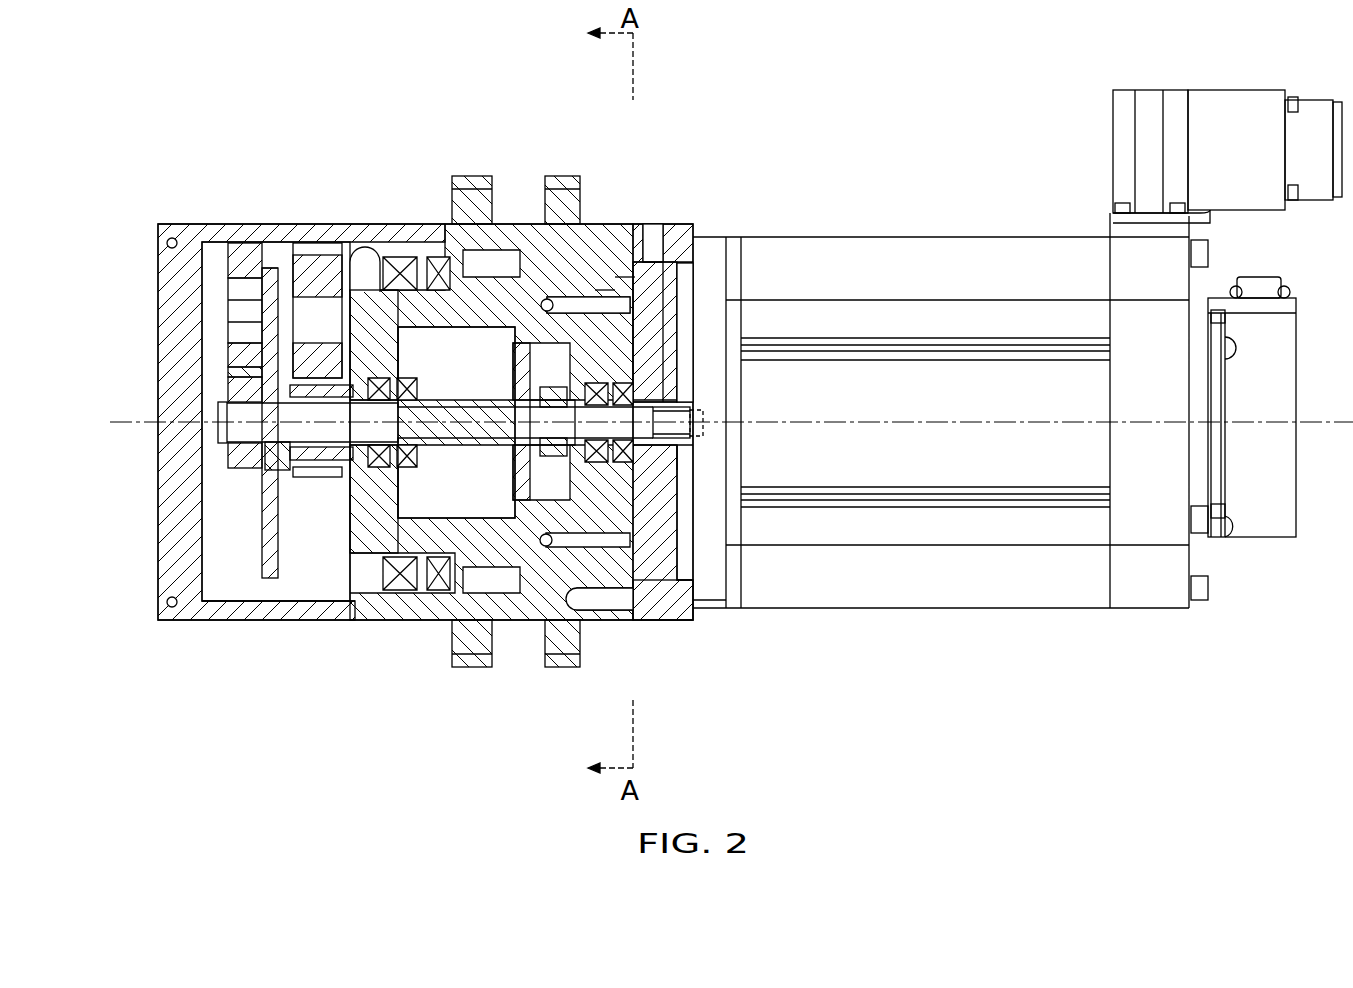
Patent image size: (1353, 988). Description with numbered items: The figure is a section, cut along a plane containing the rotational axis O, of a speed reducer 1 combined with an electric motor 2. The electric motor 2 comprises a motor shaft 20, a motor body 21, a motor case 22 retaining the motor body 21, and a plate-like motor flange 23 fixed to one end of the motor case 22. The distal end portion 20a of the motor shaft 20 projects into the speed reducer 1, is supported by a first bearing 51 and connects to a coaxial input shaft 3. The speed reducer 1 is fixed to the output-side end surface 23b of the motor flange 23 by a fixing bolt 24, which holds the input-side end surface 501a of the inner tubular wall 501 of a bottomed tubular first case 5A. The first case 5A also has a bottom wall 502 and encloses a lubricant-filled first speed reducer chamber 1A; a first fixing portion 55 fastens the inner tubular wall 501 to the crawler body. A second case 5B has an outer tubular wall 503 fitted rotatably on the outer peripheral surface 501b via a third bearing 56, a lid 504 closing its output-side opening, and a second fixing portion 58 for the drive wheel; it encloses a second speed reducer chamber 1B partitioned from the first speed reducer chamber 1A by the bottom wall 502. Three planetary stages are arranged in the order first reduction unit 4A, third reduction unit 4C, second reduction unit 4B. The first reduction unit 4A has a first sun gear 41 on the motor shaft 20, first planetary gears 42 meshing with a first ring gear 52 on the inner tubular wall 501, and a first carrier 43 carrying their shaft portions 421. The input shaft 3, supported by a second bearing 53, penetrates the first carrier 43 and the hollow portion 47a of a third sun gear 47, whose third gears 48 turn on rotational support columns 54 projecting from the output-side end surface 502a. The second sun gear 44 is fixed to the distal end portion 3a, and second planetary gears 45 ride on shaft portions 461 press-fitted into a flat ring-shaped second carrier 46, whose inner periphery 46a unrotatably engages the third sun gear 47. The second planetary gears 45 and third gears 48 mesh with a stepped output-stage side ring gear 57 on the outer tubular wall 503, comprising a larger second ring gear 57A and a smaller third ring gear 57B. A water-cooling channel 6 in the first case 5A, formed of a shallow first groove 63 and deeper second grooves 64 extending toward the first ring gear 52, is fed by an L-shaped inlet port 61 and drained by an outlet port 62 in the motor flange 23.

The speed reducer 1 is at (200, 224).
The first speed reducer chamber 1A is at (468, 376).
The second speed reducer chamber 1B is at (248, 538).
The electric motor 2 is at (945, 237).
The input shaft 3 is at (318, 462).
The distal end portion 3a is at (262, 427).
The first reduction unit 4A is at (498, 478).
The second reduction unit 4B is at (222, 481).
The third reduction unit 4C is at (288, 472).
The first case 5A is at (650, 240).
The second case 5B is at (437, 255).
The water-cooling channel 6 is at (604, 294).
The motor shaft 20 is at (652, 452).
The distal end portion 20a is at (615, 465).
The motor body 21 is at (1060, 518).
The motor case 22 is at (912, 577).
The motor flange 23 is at (690, 228).
The output-side end surface 23b is at (642, 605).
The fixing bolt 24 is at (632, 608).
The first sun gear 41 is at (547, 460).
The first planetary gears 42 is at (668, 352).
The shaft portions 421 is at (664, 368).
The first carrier 43 is at (523, 502).
The second sun gear 44 is at (238, 380).
The second planetary gears 45 is at (240, 272).
The second carrier 46 is at (245, 302).
The shaft portions 461 is at (238, 322).
The inner periphery 46a is at (240, 407).
The third sun gear 47 is at (268, 552).
The hollow portion 47a is at (250, 455).
The third gears 48 is at (270, 266).
The first bearing 51 is at (672, 390).
The first ring gear 52 is at (650, 320).
The second bearing 53 is at (374, 555).
The rotational support columns 54 is at (365, 288).
The first fixing portion 55 is at (560, 175).
The third bearing 56 is at (432, 258).
The output-stage side ring gear 57 is at (228, 262).
The second ring gear 57A is at (243, 248).
The third ring gear 57B is at (318, 250).
The second fixing portion 58 is at (478, 175).
The inlet port 61 is at (668, 335).
The outlet port 62 is at (710, 261).
The first groove 63 is at (625, 280).
The second grooves 64 is at (555, 268).
The inner tubular wall 501 is at (497, 262).
The input-side end surface 501a is at (676, 604).
The outer peripheral surface 501b is at (400, 262).
The bottom wall 502 is at (420, 600).
The output-side end surface 502a is at (338, 477).
The outer tubular wall 503 is at (245, 618).
The lid 504 is at (218, 415).
The rotational axis O is at (1317, 422).